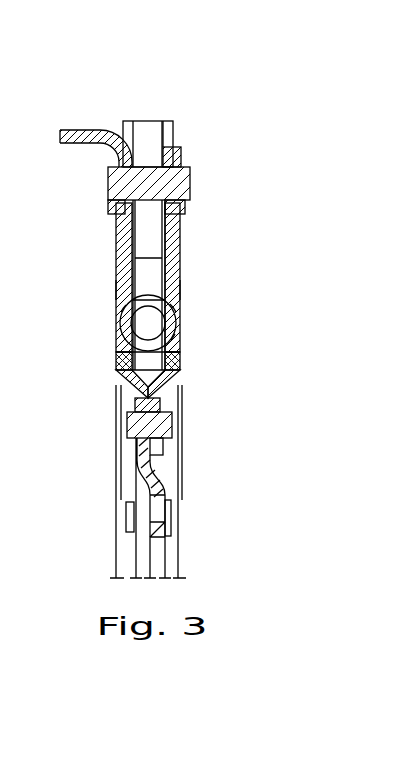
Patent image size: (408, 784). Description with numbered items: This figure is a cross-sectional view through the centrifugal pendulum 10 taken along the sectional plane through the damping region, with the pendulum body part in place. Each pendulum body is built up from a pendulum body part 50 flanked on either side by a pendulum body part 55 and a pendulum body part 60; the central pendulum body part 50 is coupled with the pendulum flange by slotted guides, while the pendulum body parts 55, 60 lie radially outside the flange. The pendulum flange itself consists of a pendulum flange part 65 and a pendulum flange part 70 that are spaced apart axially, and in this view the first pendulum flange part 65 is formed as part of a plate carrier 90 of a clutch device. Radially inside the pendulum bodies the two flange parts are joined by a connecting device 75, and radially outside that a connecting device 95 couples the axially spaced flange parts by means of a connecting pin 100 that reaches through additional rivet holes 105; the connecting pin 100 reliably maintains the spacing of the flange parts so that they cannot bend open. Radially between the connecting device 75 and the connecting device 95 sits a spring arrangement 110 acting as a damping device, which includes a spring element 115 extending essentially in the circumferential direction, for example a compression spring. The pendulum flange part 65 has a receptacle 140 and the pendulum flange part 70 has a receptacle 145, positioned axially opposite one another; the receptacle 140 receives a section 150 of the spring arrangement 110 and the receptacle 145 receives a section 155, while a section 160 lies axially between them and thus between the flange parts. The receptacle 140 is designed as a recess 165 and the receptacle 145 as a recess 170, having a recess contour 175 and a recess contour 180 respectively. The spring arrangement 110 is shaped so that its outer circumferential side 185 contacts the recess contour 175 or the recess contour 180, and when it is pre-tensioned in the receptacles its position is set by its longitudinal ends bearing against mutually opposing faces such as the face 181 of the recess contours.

The centrifugal pendulum 10 is at (222, 89).
The pendulum body part 50 is at (151, 222).
The pendulum body part 55 is at (130, 120).
The pendulum body part 60 is at (168, 118).
The pendulum flange part 65 is at (118, 218).
The pendulum flange part 70 is at (181, 238).
The connecting device 75 is at (204, 506).
The plate carrier 90 is at (83, 130).
The connecting device 95 is at (195, 170).
The connecting pin 100 is at (185, 165).
The rivet holes 105 is at (204, 180).
The spring arrangement 110 is at (199, 324).
The spring element 115 is at (182, 367).
The receptacle 140 is at (106, 371).
The receptacle 145 is at (182, 395).
The section 150 is at (118, 393).
The section 155 is at (195, 379).
The section 160 is at (172, 413).
The recess 165 is at (117, 292).
The recess 170 is at (176, 290).
The recess contour 175 is at (118, 347).
The recess contour 180 is at (182, 348).
The face 181 is at (118, 306).
The outer circumferential side 185 is at (177, 311).